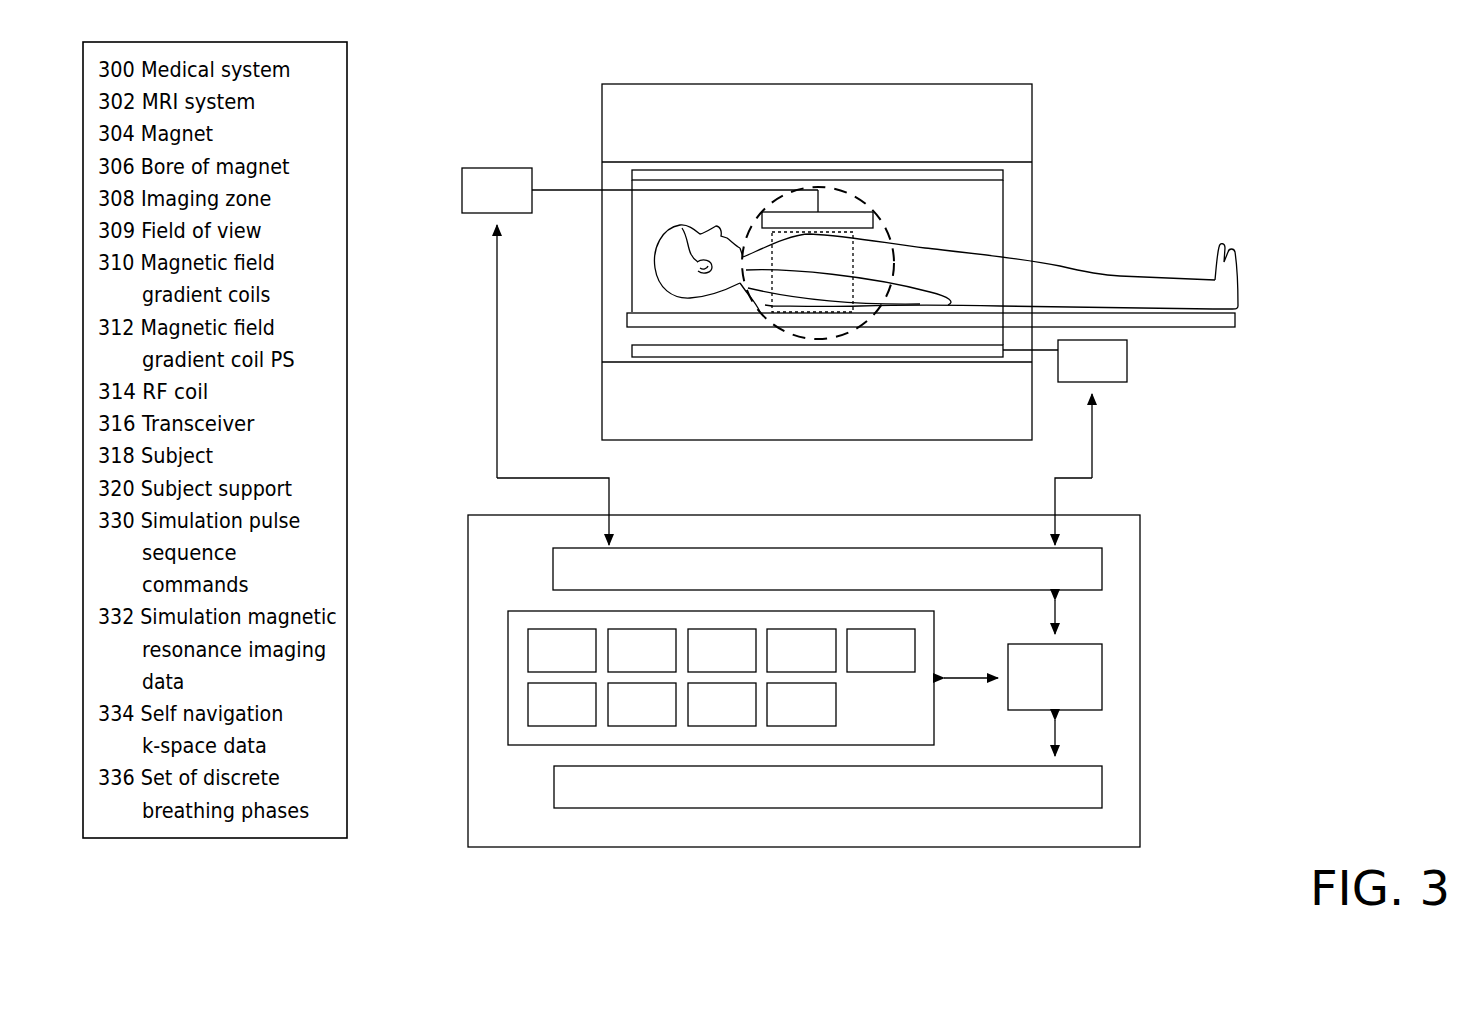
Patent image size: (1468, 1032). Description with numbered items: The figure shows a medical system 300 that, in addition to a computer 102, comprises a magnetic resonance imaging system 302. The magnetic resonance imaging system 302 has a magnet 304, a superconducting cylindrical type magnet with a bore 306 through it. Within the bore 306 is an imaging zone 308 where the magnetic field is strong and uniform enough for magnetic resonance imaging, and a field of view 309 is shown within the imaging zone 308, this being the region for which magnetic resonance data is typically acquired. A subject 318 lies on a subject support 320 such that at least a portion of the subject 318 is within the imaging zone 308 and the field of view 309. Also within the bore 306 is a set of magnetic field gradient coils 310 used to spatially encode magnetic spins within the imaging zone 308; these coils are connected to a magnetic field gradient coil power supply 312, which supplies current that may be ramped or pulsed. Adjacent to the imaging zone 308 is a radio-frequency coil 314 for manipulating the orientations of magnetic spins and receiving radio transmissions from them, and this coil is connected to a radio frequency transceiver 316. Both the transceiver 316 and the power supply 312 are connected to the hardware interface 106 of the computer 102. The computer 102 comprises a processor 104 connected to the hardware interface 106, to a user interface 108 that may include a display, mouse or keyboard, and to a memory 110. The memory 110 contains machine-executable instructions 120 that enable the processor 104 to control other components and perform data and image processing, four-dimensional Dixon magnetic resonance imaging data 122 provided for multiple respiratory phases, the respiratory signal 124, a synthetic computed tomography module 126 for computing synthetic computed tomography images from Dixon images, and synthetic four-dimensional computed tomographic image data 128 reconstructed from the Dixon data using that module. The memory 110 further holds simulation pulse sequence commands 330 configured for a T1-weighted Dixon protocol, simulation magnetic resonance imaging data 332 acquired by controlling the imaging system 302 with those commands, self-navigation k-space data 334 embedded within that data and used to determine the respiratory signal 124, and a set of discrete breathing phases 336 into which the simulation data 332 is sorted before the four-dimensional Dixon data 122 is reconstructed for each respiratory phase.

The medical system 300 is at (881, 475).
The magnetic resonance imaging system 302 is at (921, 290).
The magnet 304 is at (1032, 120).
The bore 306 is at (968, 206).
The imaging zone 308 is at (876, 212).
The field of view 309 is at (855, 258).
The magnetic field gradient coils 310 is at (723, 350).
The magnetic field gradient coil power supply 312 is at (1071, 374).
The radio-frequency coil 314 is at (828, 212).
The radio frequency transceiver 316 is at (476, 204).
The subject 318 is at (1240, 270).
The subject support 320 is at (1237, 320).
The simulation pulse sequence commands 330 is at (541, 717).
The simulation magnetic resonance imaging data 332 is at (621, 717).
The self-navigation k-space data 334 is at (701, 717).
The set of discrete breathing phases 336 is at (780, 717).
The computer 102 is at (808, 681).
The processor 104 is at (1034, 690).
The hardware interface 106 is at (806, 582).
The user interface 108 is at (806, 800).
The memory 110 is at (658, 678).
The machine-executable instructions 120 is at (541, 663).
The four-dimensional Dixon magnetic resonance imaging data 122 is at (621, 663).
The respiratory signal 124 is at (701, 663).
The synthetic computed tomography module 126 is at (780, 663).
The synthetic four-dimensional computed tomographic image data 128 is at (860, 663).